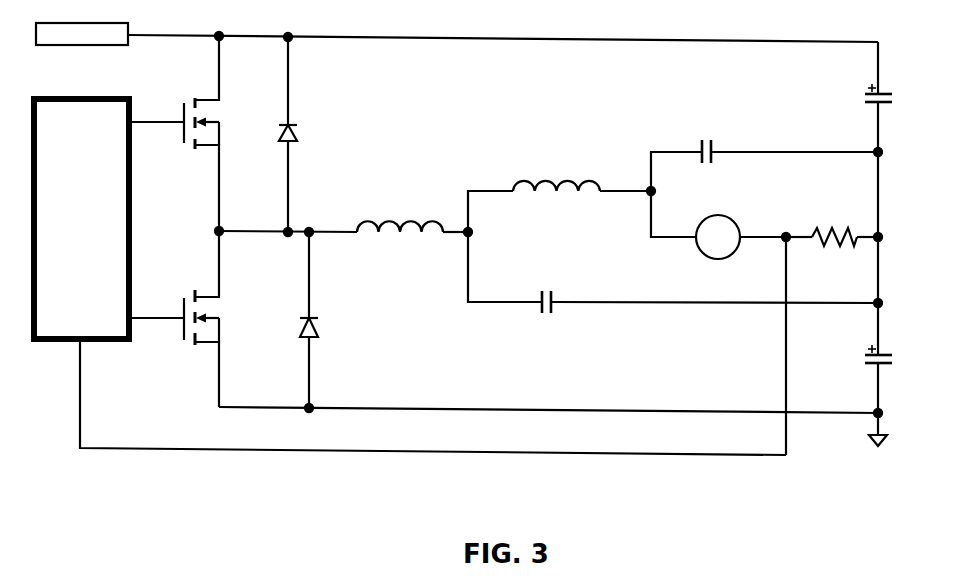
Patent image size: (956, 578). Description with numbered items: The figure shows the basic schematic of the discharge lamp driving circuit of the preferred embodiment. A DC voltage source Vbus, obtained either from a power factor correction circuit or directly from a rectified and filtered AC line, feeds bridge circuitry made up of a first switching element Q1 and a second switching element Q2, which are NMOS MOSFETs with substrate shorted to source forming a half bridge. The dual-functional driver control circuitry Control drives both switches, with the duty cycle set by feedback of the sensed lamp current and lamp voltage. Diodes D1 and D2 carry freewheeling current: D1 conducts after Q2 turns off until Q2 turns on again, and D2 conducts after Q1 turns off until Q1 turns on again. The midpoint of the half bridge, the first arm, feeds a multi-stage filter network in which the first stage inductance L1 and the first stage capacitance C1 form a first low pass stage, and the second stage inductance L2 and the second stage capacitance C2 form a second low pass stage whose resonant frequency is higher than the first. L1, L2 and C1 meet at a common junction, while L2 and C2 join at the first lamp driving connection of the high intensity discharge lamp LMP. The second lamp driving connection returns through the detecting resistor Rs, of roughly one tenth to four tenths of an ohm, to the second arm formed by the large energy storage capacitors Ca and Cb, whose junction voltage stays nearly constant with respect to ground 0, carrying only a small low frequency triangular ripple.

The DC voltage source Vbus is at (457, 34).
The control circuitry Control is at (410, 277).
The first switching element Q1 is at (183, 133).
The second switching element Q2 is at (186, 317).
The diode D1 is at (306, 137).
The diode D2 is at (329, 320).
The first stage inductance L1 is at (415, 214).
The second stage inductance L2 is at (562, 192).
The first stage capacitance C1 is at (675, 272).
The second stage capacitance C2 is at (767, 151).
The high intensity discharge lamp LMP is at (721, 323).
The detecting resistor Rs is at (834, 223).
The energy storage element Ca is at (861, 172).
The energy storage element Cb is at (854, 360).
The ground 0 is at (884, 436).